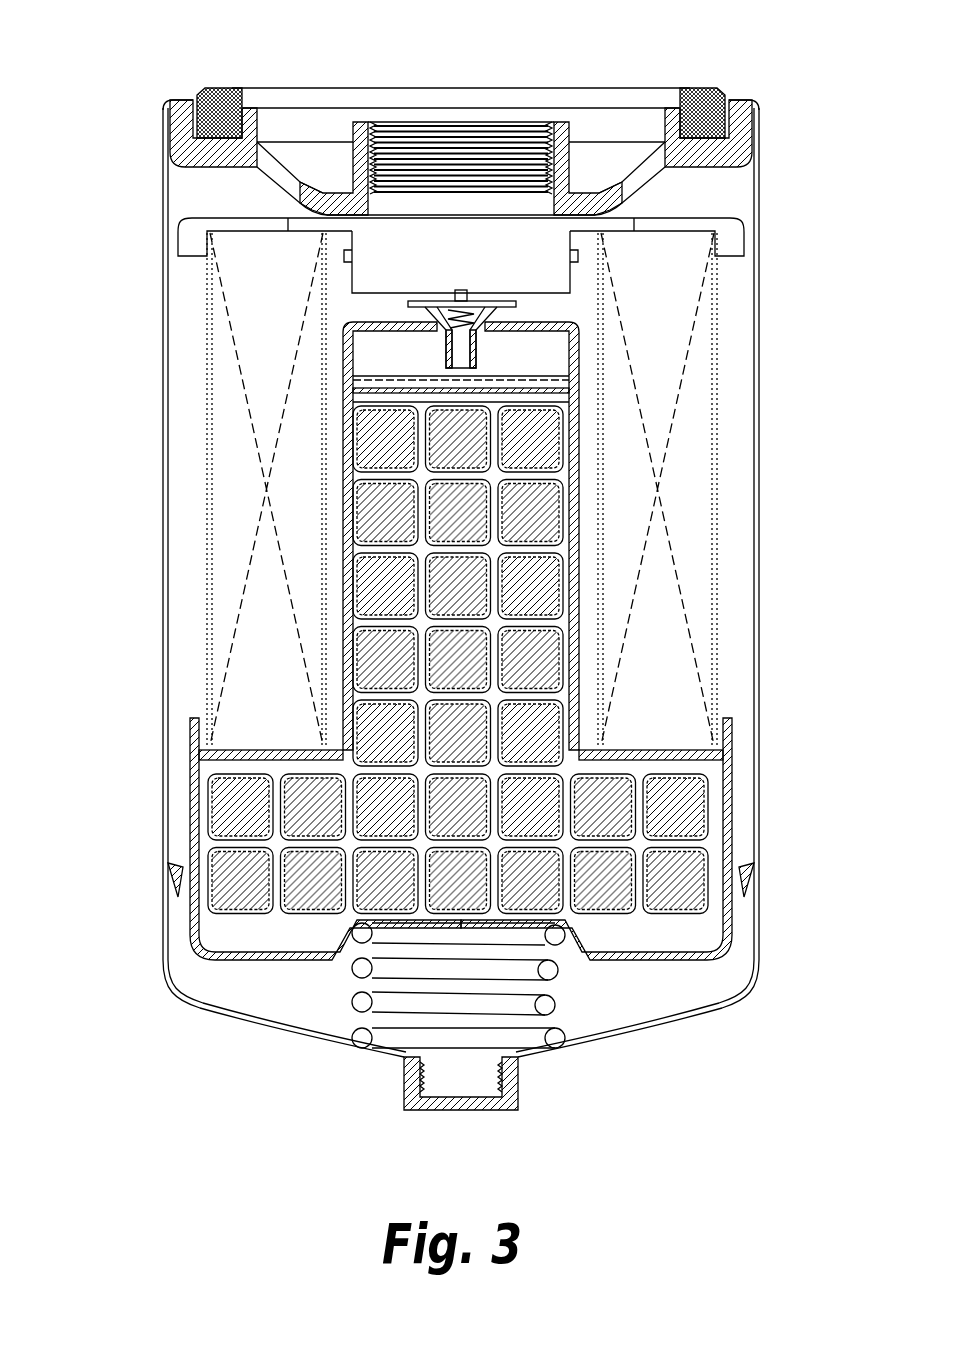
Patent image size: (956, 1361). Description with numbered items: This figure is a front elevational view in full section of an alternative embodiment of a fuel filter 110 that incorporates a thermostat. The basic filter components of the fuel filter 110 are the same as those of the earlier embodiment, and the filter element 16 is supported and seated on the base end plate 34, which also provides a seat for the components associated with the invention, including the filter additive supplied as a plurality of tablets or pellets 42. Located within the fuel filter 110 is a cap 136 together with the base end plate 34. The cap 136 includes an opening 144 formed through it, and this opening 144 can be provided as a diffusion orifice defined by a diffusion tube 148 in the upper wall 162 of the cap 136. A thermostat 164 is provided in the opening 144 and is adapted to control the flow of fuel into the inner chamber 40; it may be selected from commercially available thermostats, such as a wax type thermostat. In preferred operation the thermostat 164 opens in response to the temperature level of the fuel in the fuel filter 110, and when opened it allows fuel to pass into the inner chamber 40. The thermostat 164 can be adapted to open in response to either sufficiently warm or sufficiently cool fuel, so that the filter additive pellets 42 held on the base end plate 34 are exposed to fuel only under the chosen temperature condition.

The fuel filter 110 is at (148, 55).
The filter element 16 is at (283, 294).
The upper wall 162 is at (420, 316).
The diffusion tube 148 is at (447, 330).
The thermostat 164 is at (493, 295).
The opening 144 is at (473, 368).
The inner chamber 40 is at (572, 557).
The cap 136 is at (572, 628).
The base end plate 34 is at (727, 945).
The tablets or pellets 42 is at (237, 807).